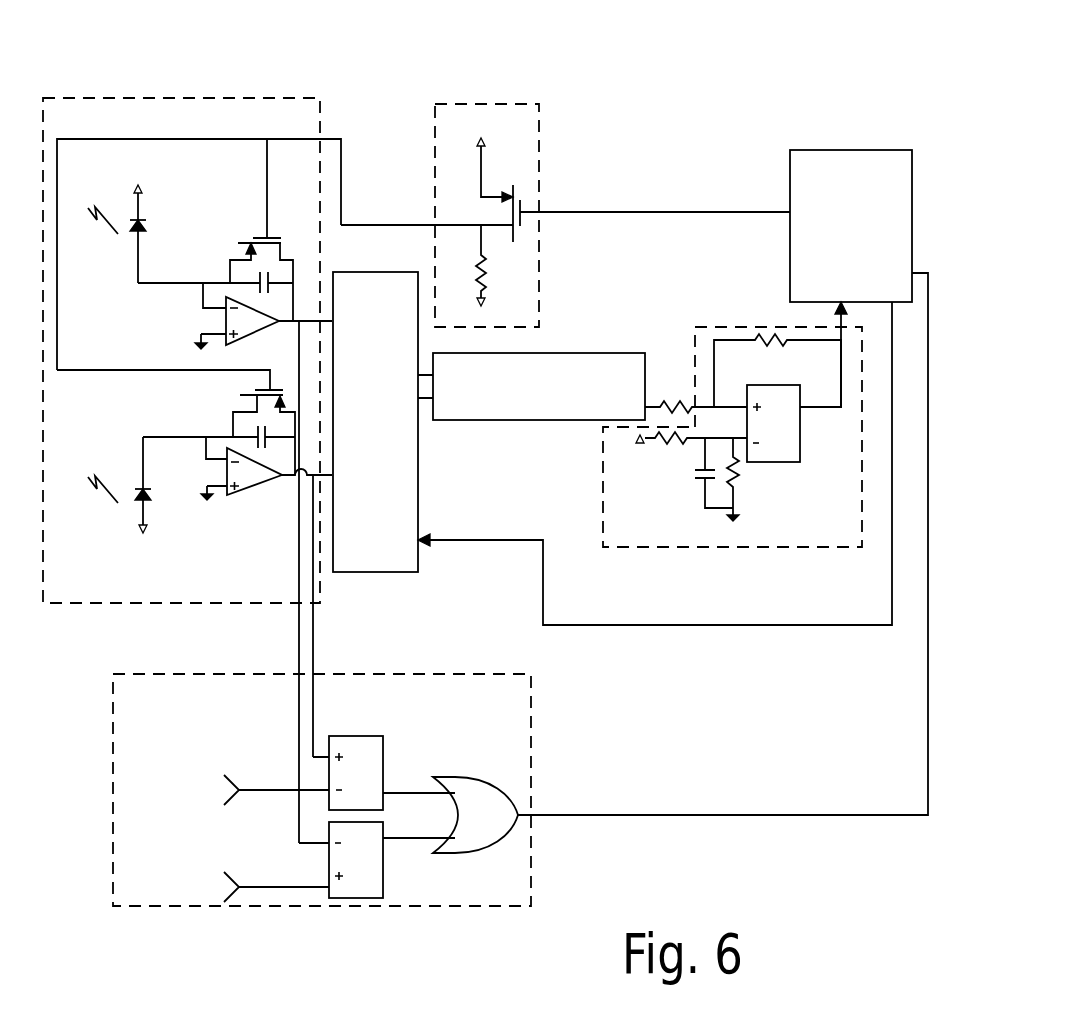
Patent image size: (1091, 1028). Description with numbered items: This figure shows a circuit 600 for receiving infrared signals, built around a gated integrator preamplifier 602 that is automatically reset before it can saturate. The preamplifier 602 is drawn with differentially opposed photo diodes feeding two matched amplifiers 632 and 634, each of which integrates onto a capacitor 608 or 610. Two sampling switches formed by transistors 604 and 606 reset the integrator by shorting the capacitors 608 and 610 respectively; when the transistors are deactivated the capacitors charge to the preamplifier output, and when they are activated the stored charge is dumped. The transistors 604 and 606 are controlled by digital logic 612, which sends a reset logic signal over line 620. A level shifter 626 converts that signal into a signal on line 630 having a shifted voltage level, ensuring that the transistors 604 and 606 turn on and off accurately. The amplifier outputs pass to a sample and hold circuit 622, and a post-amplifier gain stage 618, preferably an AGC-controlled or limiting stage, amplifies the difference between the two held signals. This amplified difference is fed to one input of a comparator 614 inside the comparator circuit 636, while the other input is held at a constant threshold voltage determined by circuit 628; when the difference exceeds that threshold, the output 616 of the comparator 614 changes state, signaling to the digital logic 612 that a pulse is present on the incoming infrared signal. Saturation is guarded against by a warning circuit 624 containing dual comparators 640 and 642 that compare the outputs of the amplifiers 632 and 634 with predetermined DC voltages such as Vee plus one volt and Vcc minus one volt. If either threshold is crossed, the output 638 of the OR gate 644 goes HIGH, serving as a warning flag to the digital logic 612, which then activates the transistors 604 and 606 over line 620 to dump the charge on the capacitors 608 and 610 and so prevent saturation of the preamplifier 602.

The circuit 600 is at (675, 60).
The gated integrator preamplifier 602 is at (153, 97).
The transistor 604 is at (258, 236).
The transistor 606 is at (240, 393).
The capacitor 608 is at (255, 272).
The capacitor 610 is at (256, 423).
The digital logic 612 is at (878, 246).
The comparator 614 is at (790, 435).
The output of comparator 616 is at (818, 408).
The post-amplifier gain stage 618 is at (586, 409).
The line 620 is at (670, 212).
The sample and hold circuit 622 is at (392, 573).
The warning circuit 624 is at (531, 706).
The level shifter 626 is at (470, 103).
The circuit 628 is at (757, 484).
The line 630 is at (362, 225).
The amplifier 632 is at (238, 328).
The amplifier 634 is at (240, 488).
The comparator circuit 636 is at (603, 499).
The output of OR gate 638 is at (637, 816).
The comparator 640 is at (373, 784).
The comparator 642 is at (373, 870).
The OR gate 644 is at (471, 824).